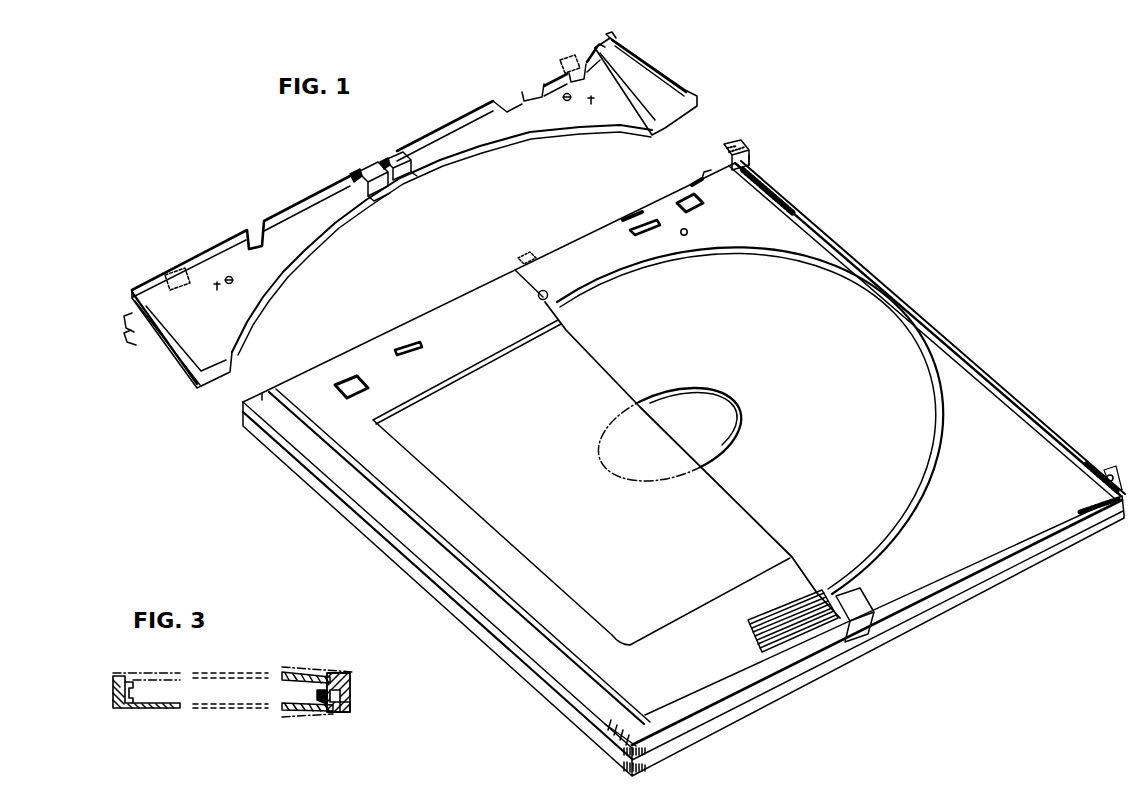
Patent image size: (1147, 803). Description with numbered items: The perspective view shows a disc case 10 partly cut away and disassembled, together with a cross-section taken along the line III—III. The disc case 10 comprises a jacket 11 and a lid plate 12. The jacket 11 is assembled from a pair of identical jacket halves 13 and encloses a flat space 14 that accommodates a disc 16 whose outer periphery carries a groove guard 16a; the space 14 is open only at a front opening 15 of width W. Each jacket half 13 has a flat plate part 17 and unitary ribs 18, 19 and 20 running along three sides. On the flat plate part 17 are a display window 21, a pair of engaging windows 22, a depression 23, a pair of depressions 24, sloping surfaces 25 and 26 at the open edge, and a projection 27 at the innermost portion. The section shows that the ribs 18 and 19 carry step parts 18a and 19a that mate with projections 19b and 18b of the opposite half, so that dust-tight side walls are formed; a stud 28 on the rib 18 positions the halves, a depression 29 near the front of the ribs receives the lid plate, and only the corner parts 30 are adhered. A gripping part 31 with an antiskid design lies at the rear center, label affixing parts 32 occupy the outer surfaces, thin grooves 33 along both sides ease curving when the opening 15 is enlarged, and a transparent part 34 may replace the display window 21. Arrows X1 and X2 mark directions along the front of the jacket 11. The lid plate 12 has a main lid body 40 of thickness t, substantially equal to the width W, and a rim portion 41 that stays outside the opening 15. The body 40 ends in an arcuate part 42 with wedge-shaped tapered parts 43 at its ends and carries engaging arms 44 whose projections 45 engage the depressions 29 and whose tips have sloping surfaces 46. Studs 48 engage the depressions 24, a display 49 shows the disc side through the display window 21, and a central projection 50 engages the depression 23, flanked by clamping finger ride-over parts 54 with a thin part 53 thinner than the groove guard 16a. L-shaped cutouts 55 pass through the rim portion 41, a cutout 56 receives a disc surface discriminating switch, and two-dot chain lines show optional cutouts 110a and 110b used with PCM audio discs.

In FIG. 1, the disc case 10 is at (770, 137).
In FIG. 1, the jacket 11 is at (478, 647).
In FIG. 1, the lid plate 12 is at (280, 212).
In FIG. 1, the jacket halves 13 is at (787, 676).
In FIG. 3, the jacket halves 13 is at (182, 708).
In FIG. 1, the flat cavity or space 14 is at (1000, 410).
In FIG. 1, the opening 15 is at (527, 258).
In FIG. 1, the disc 16 is at (923, 413).
In FIG. 1, the groove guard 16a is at (940, 477).
In FIG. 1, the flat plate part 17 is at (405, 498).
In FIG. 1, the rib 18 is at (423, 577).
In FIG. 3, the rib 18 is at (330, 712).
In FIG. 3, the step part 18a is at (113, 676).
In FIG. 3, the projection 18b is at (320, 702).
In FIG. 1, the rib 19 is at (442, 597).
In FIG. 3, the rib 19 is at (113, 706).
In FIG. 3, the step part 19a is at (145, 708).
In FIG. 3, the projection 19b is at (124, 692).
In FIG. 1, the rib 20 is at (973, 582).
In FIG. 1, the display window 21 is at (343, 380).
In FIG. 1, the engaging windows 22 is at (405, 345).
In FIG. 1, the depression 23 is at (553, 300).
In FIG. 1, the depressions 24 is at (685, 236).
In FIG. 1, the sloping surface 25 is at (624, 217).
In FIG. 1, the sloping surface 26 is at (695, 183).
In FIG. 1, the projection 27 is at (867, 597).
In FIG. 1, the stud 28 is at (730, 142).
In FIG. 1, the depression 29 is at (743, 165).
In FIG. 1, the corner parts 30 is at (778, 183).
In FIG. 1, the gripping part 31 is at (813, 630).
In FIG. 1, the label affixing parts 32 is at (477, 513).
In FIG. 1, the grooves 33 is at (627, 720).
In FIG. 1, the transparent part 34 is at (637, 473).
In FIG. 1, the main lid body 40 is at (483, 143).
In FIG. 1, the rim portion 41 is at (441, 130).
In FIG. 1, the arcuate part 42 is at (333, 238).
In FIG. 1, the tapered parts 43 is at (208, 388).
In FIG. 1, the engaging arms 44 is at (153, 358).
In FIG. 1, the projection 45 is at (128, 343).
In FIG. 1, the sloping surface 46 is at (127, 316).
In FIG. 1, the stud 48 is at (233, 280).
In FIG. 1, the display 49 is at (216, 290).
In FIG. 1, the projection 50 is at (377, 165).
In FIG. 1, the thin part 53 is at (412, 177).
In FIG. 1, the clamping finger ride-over parts 54 is at (355, 176).
In FIG. 1, the L-shaped cutouts 55 is at (240, 248).
In FIG. 1, the cutout 56 is at (570, 66).
In FIG. 1, the cutout 110a is at (178, 278).
In FIG. 1, the cutout 110b is at (563, 67).
In FIG. 1, the width of the opening W is at (540, 267).
In FIG. 1, the thickness of the main lid body t is at (528, 116).
In FIG. 1, the direction X1 is at (255, 490).
In FIG. 1, the direction X2 is at (290, 492).
In FIG. 1, the section line III— III is at (1103, 440).